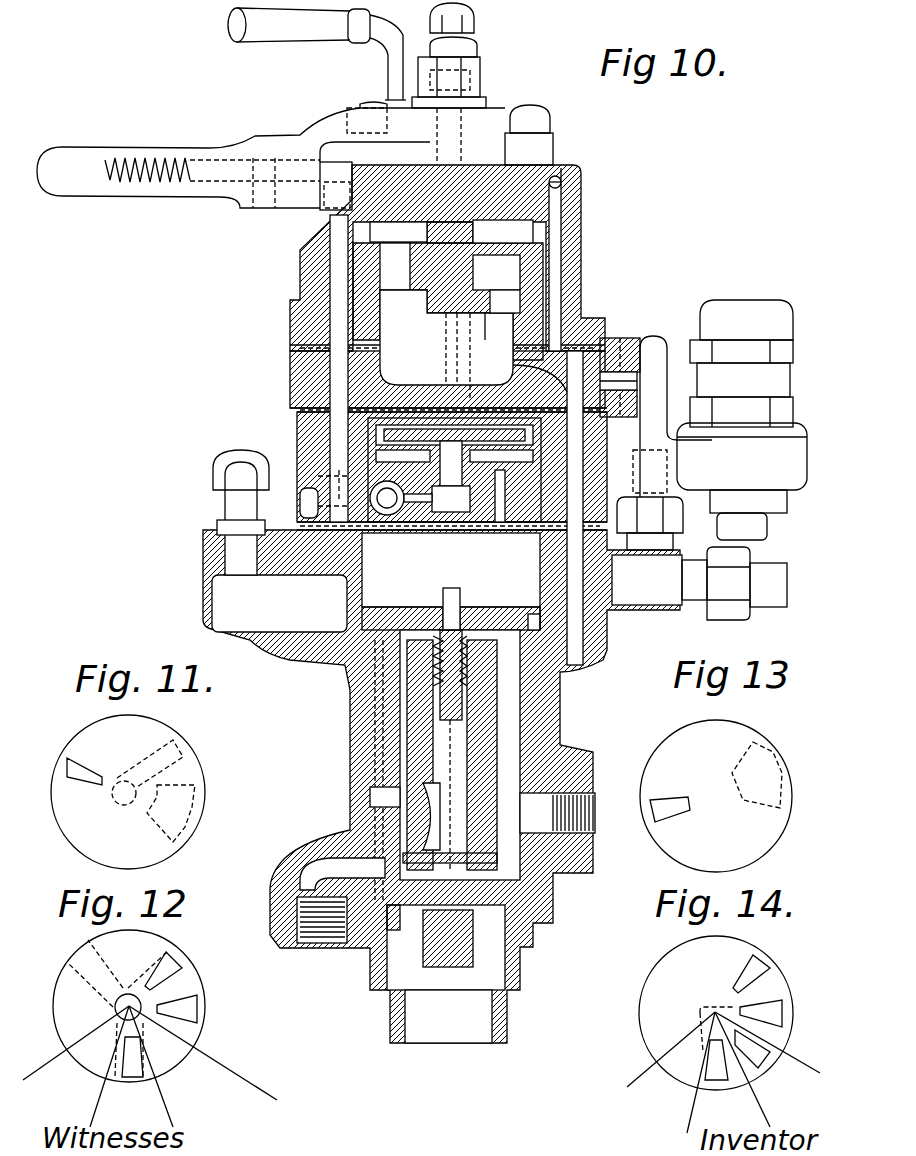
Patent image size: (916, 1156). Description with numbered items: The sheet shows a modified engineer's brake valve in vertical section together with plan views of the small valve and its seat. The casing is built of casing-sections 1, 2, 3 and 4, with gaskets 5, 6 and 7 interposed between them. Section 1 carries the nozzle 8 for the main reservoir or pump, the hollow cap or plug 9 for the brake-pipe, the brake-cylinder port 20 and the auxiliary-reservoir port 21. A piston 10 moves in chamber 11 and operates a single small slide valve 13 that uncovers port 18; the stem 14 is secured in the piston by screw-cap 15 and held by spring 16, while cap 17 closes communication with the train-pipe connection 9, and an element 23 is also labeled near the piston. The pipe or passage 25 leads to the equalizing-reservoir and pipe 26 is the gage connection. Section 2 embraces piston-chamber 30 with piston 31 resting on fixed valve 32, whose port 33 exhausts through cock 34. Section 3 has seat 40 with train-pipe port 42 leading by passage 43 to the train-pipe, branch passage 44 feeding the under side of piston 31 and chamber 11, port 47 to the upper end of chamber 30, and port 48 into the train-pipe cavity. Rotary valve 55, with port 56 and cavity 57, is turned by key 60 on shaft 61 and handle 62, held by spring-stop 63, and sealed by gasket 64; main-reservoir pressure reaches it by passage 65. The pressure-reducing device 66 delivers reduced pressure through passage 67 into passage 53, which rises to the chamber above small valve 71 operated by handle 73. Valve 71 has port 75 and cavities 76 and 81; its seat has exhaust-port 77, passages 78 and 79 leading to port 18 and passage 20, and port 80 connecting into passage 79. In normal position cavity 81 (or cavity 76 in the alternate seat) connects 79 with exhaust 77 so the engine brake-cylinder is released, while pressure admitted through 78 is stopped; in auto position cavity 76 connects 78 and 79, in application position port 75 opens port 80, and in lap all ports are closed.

In FIG. 10, the casing-section 1 is at (203, 582).
In FIG. 10, the casing-section 2 is at (297, 450).
In FIG. 10, the casing-section 3 is at (290, 378).
In FIG. 10, the casing-section 4 is at (302, 290).
In FIG. 10, the gasket 5 is at (297, 524).
In FIG. 10, the gasket 6 is at (297, 412).
In FIG. 10, the gasket 7 is at (290, 346).
In FIG. 10, the nozzle 8 is at (279, 603).
In FIG. 10, the hollow cap or plug 9 is at (448, 1016).
In FIG. 10, the piston 10 is at (534, 614).
In FIG. 10, the chamber 11 is at (451, 570).
In FIG. 10, the graduating valve 13 is at (423, 808).
In FIG. 10, the stem 14 is at (443, 590).
In FIG. 10, the screw-cap 15 is at (488, 608).
In FIG. 10, the spring 16 is at (402, 610).
In FIG. 10, the cap 17 is at (428, 946).
In FIG. 10, the port 18 is at (370, 797).
In FIG. 10, the port 20 is at (318, 946).
In FIG. 10, the port 21 is at (593, 810).
In FIG. 10, the diaphragm 23 is at (540, 607).
In FIG. 10, the pipe or passage 25 is at (699, 583).
In FIG. 10, the pipe 26 is at (225, 502).
In FIG. 10, the piston-chamber 30 is at (454, 465).
In FIG. 10, the piston 31 is at (501, 461).
In FIG. 10, the valve 32 is at (403, 460).
In FIG. 10, the port or passage 33 is at (420, 478).
In FIG. 10, the cock 34 is at (378, 542).
In FIG. 10, the seat 40 is at (431, 349).
In FIG. 10, the train-pipe port 42 is at (446, 337).
In FIG. 10, the passage 43 is at (612, 680).
In FIG. 10, the branch passage 44 is at (512, 496).
In FIG. 10, the port 47 is at (488, 318).
In FIG. 10, the port 48 is at (505, 301).
In FIG. 10, the passage 53 is at (572, 196).
In FIG. 10, the rotary valve 55 is at (503, 232).
In FIG. 10, the port 56 is at (448, 291).
In FIG. 10, the cavity 57 is at (496, 272).
In FIG. 10, the key 60 is at (430, 228).
In FIG. 10, the shaft 61 is at (470, 165).
In FIG. 10, the handle 62 is at (271, 155).
In FIG. 10, the spring-stop 63 is at (336, 186).
In FIG. 10, the gasket 64 is at (561, 168).
In FIG. 10, the passage 65 is at (337, 368).
In FIG. 10, the pressure-reducing device 66 is at (742, 420).
In FIG. 10, the passage 67 is at (637, 380).
In FIG. 11, the small valve 71 is at (128, 792).
In FIG. 13, the small valve 71 is at (716, 796).
In FIG. 10, the handle 73 is at (317, 54).
In FIG. 11, the port 75 is at (75, 778).
In FIG. 13, the port 75 is at (664, 812).
In FIG. 11, the cavity 76 is at (190, 805).
In FIG. 13, the cavity 76 is at (762, 764).
In FIG. 12, the exhaust-port 77 is at (113, 1009).
In FIG. 14, the exhaust-port 77 is at (760, 968).
In FIG. 10, the passage 78 is at (457, 350).
In FIG. 12, the passage 78 is at (197, 1010).
In FIG. 14, the passage 78 is at (760, 1063).
In FIG. 10, the passage 79 is at (472, 375).
In FIG. 12, the passage 79 is at (175, 966).
In FIG. 14, the passage 79 is at (782, 1013).
In FIG. 12, the port 80 is at (134, 1072).
In FIG. 14, the port 80 is at (718, 1076).
In FIG. 11, the cavity 81 is at (178, 757).